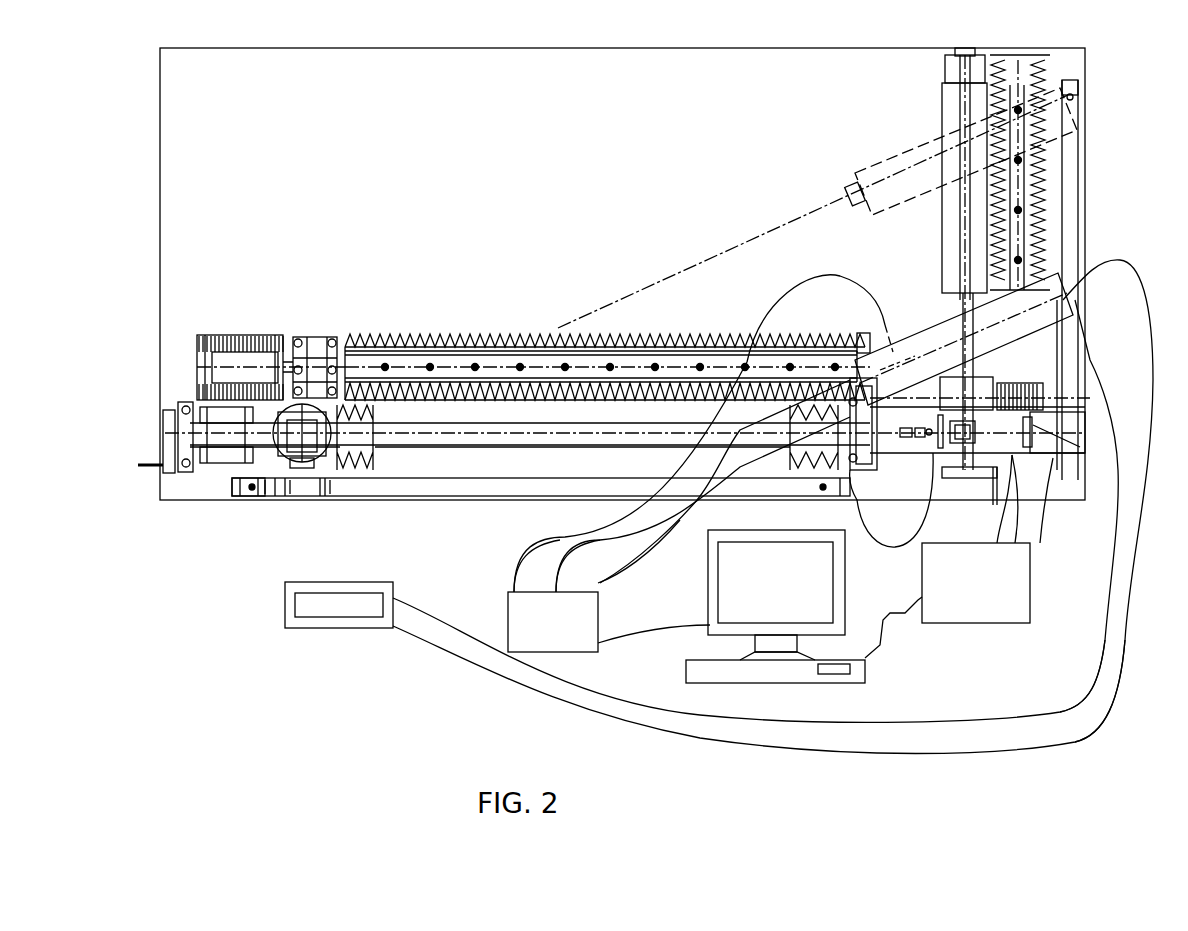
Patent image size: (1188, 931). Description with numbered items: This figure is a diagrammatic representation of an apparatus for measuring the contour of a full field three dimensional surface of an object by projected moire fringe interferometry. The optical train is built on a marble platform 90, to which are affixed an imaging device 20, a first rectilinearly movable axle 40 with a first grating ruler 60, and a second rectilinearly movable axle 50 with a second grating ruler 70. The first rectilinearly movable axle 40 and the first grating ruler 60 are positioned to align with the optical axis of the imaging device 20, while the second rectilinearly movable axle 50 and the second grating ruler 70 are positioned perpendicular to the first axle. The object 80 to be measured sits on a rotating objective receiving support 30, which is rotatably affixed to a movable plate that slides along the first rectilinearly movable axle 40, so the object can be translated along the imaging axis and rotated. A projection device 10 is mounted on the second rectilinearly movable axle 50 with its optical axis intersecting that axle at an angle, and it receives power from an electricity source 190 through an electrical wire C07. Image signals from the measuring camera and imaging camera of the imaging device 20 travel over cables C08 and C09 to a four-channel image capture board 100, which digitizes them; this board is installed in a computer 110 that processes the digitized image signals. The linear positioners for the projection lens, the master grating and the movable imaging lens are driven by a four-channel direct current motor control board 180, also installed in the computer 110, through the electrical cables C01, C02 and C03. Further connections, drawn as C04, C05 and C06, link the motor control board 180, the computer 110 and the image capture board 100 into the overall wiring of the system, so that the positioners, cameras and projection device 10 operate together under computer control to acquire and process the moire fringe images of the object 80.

The projection device 10 is at (1067, 240).
The imaging device 20 is at (1080, 372).
The rotating objective receiving support 30 is at (296, 462).
The first rectilinearly movable axle 40 is at (175, 438).
The second rectilinearly movable axle 50 is at (1060, 430).
The first grating ruler 60 is at (845, 507).
The second grating ruler 70 is at (1077, 118).
The object 80 is at (305, 465).
The marble platform 90 is at (433, 500).
The image capture board 100 is at (1017, 625).
The computer 110 is at (684, 684).
The direct current motor control board 180 is at (570, 653).
The electricity source 190 is at (345, 630).
The electrical cable C01 is at (525, 555).
The electrical cable C02 is at (578, 543).
The electrical cable C03 is at (600, 584).
The cable C04 is at (697, 620).
The cable C05 is at (880, 660).
The cable C06 is at (1097, 627).
The electrical wire C07 is at (1120, 595).
The cable C08 is at (1047, 512).
The cable C09 is at (998, 542).